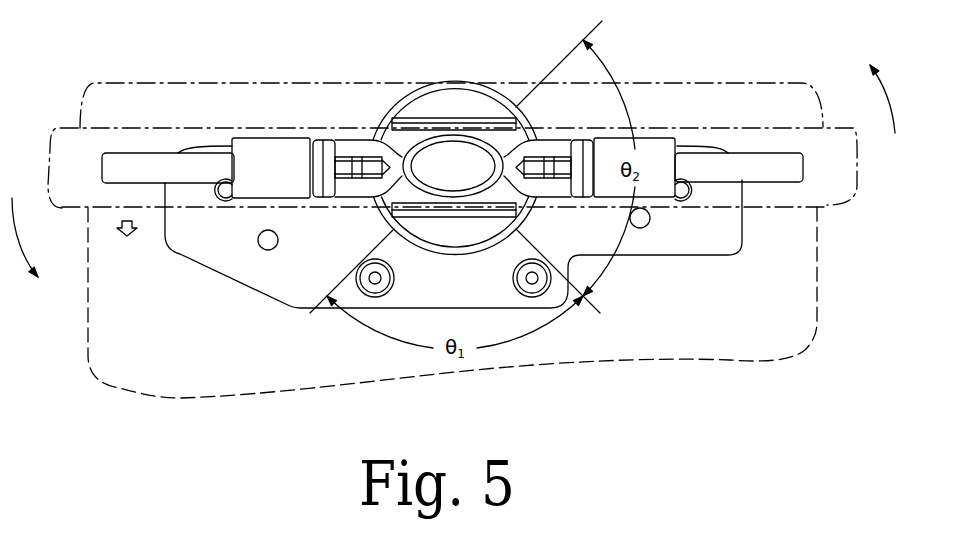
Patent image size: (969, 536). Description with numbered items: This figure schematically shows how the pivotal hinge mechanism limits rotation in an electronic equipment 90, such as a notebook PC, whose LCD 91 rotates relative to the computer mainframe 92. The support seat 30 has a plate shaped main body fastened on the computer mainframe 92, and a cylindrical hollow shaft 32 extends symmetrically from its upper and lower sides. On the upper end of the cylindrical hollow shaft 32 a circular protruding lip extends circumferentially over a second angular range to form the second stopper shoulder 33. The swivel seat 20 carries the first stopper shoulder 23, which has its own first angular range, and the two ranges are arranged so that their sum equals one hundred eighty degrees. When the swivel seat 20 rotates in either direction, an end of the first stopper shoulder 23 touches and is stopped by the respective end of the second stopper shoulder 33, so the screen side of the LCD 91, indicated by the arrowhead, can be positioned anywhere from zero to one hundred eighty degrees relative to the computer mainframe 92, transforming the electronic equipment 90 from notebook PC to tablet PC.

The swivel seat 20 is at (268, 137).
The first stopper shoulder 23 is at (454, 258).
The support seat 30 is at (237, 286).
The cylindrical hollow shaft 32 is at (456, 82).
The second stopper shoulder 33 is at (516, 113).
The electronic equipment 90 is at (724, 318).
The LCD 91 is at (846, 128).
The computer mainframe 92 is at (817, 275).